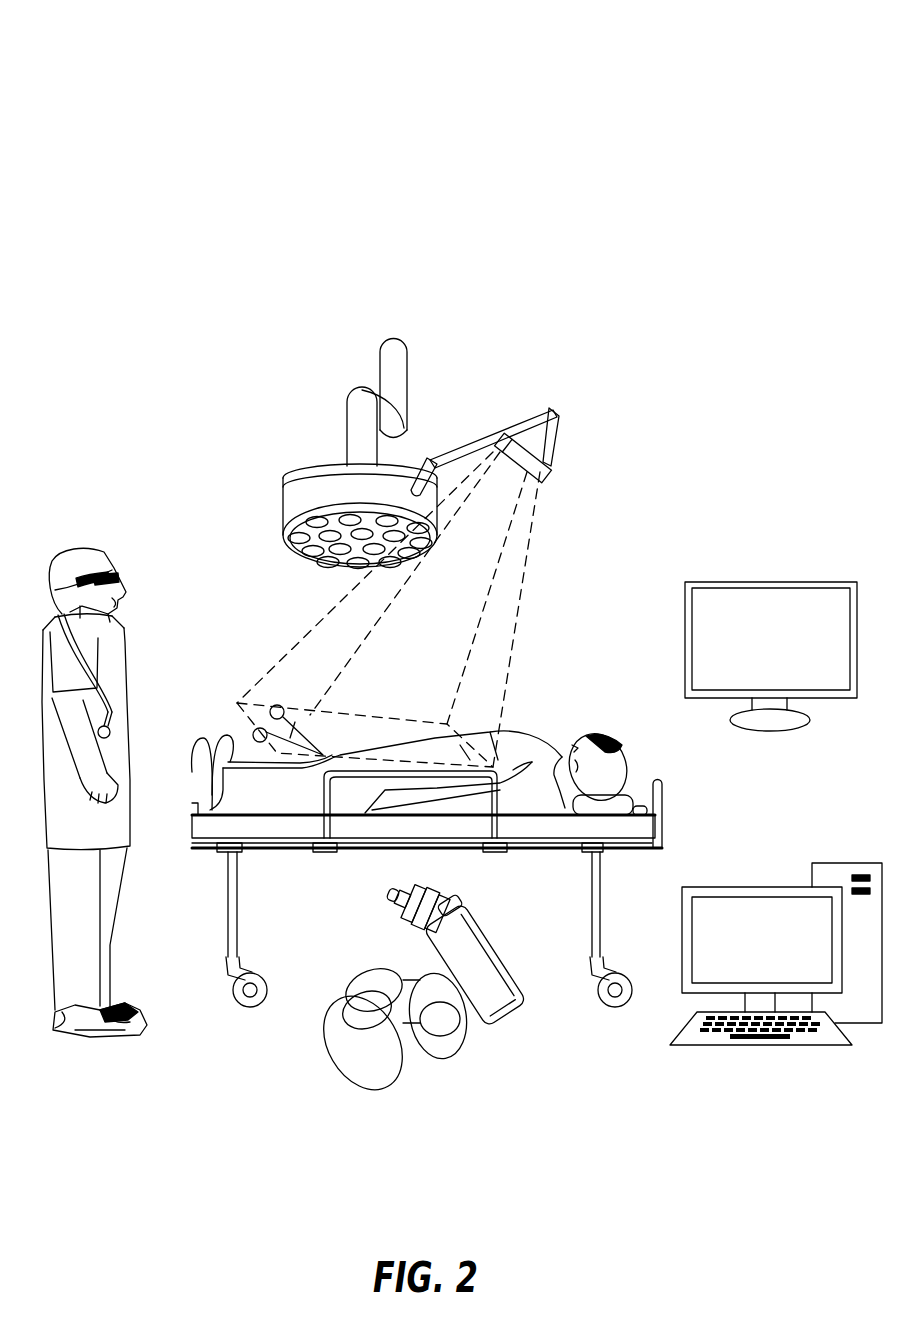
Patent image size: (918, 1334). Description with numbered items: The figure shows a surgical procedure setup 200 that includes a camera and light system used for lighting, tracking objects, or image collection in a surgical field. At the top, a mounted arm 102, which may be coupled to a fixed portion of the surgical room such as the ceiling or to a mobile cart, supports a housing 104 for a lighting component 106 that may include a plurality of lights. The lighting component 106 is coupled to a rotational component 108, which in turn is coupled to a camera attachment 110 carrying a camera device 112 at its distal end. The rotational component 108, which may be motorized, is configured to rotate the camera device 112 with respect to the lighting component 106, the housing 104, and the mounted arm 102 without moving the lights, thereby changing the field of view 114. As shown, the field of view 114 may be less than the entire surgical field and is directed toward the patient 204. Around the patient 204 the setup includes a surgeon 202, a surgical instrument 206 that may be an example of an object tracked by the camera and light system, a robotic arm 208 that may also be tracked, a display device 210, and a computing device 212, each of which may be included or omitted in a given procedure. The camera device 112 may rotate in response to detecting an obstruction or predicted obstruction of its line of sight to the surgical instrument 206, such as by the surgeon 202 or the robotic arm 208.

The surgical procedure setup 200 is at (736, 30).
The mounted arm 102 is at (407, 375).
The housing 104 is at (312, 466).
The lighting component 106 is at (313, 554).
The rotational component 108 is at (283, 506).
The camera attachment 110 is at (553, 410).
The camera device 112 is at (552, 468).
The field of view 114 is at (524, 592).
The surgeon 202 is at (115, 628).
The patient 204 is at (540, 716).
The surgical instrument 206 is at (258, 695).
The robotic arm 208 is at (470, 921).
The display device 210 is at (767, 582).
The computing device 212 is at (772, 887).